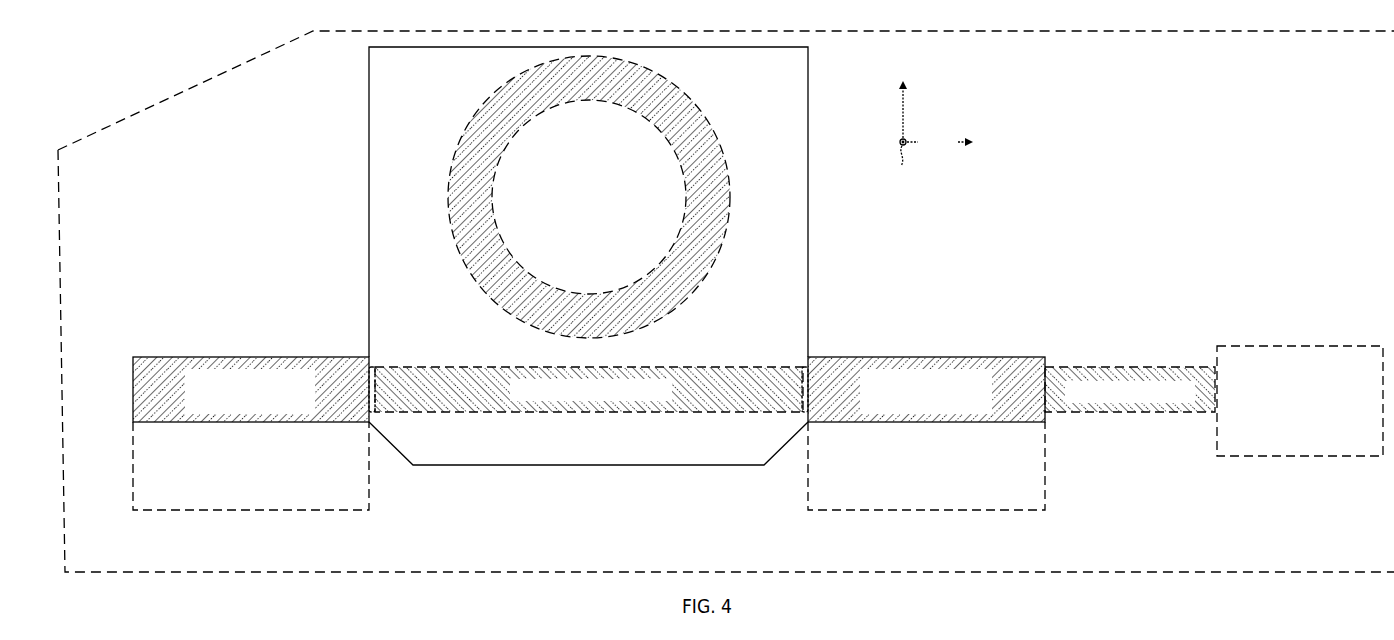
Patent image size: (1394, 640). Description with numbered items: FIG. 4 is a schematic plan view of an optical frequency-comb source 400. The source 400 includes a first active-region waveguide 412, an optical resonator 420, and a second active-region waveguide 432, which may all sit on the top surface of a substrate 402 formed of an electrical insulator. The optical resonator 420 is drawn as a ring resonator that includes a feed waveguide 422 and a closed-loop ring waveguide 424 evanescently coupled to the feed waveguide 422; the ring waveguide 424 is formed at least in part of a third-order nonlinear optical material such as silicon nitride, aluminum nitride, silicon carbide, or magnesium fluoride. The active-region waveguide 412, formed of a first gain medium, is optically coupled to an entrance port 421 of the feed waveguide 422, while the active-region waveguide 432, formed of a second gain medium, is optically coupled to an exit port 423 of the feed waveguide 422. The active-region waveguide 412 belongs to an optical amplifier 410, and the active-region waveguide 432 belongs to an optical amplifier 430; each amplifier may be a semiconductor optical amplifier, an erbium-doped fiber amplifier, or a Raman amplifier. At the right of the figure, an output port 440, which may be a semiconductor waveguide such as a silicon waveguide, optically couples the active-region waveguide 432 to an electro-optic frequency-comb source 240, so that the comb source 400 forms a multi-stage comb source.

The optical frequency-comb source 400 is at (149, 54).
The substrate 402 is at (726, 301).
The optical amplifier 410 is at (251, 433).
The active-region waveguide 412 is at (251, 389).
The optical resonator 420 is at (588, 256).
The entrance port 421 is at (372, 367).
The feed waveguide 422 is at (589, 389).
The exit port 423 is at (805, 367).
The closed-loop waveguide 424 is at (597, 101).
The optical amplifier 430 is at (926, 433).
The active-region waveguide 432 is at (926, 389).
The output port 440 is at (1130, 389).
The electro-optic frequency-comb source 240 is at (1300, 401).